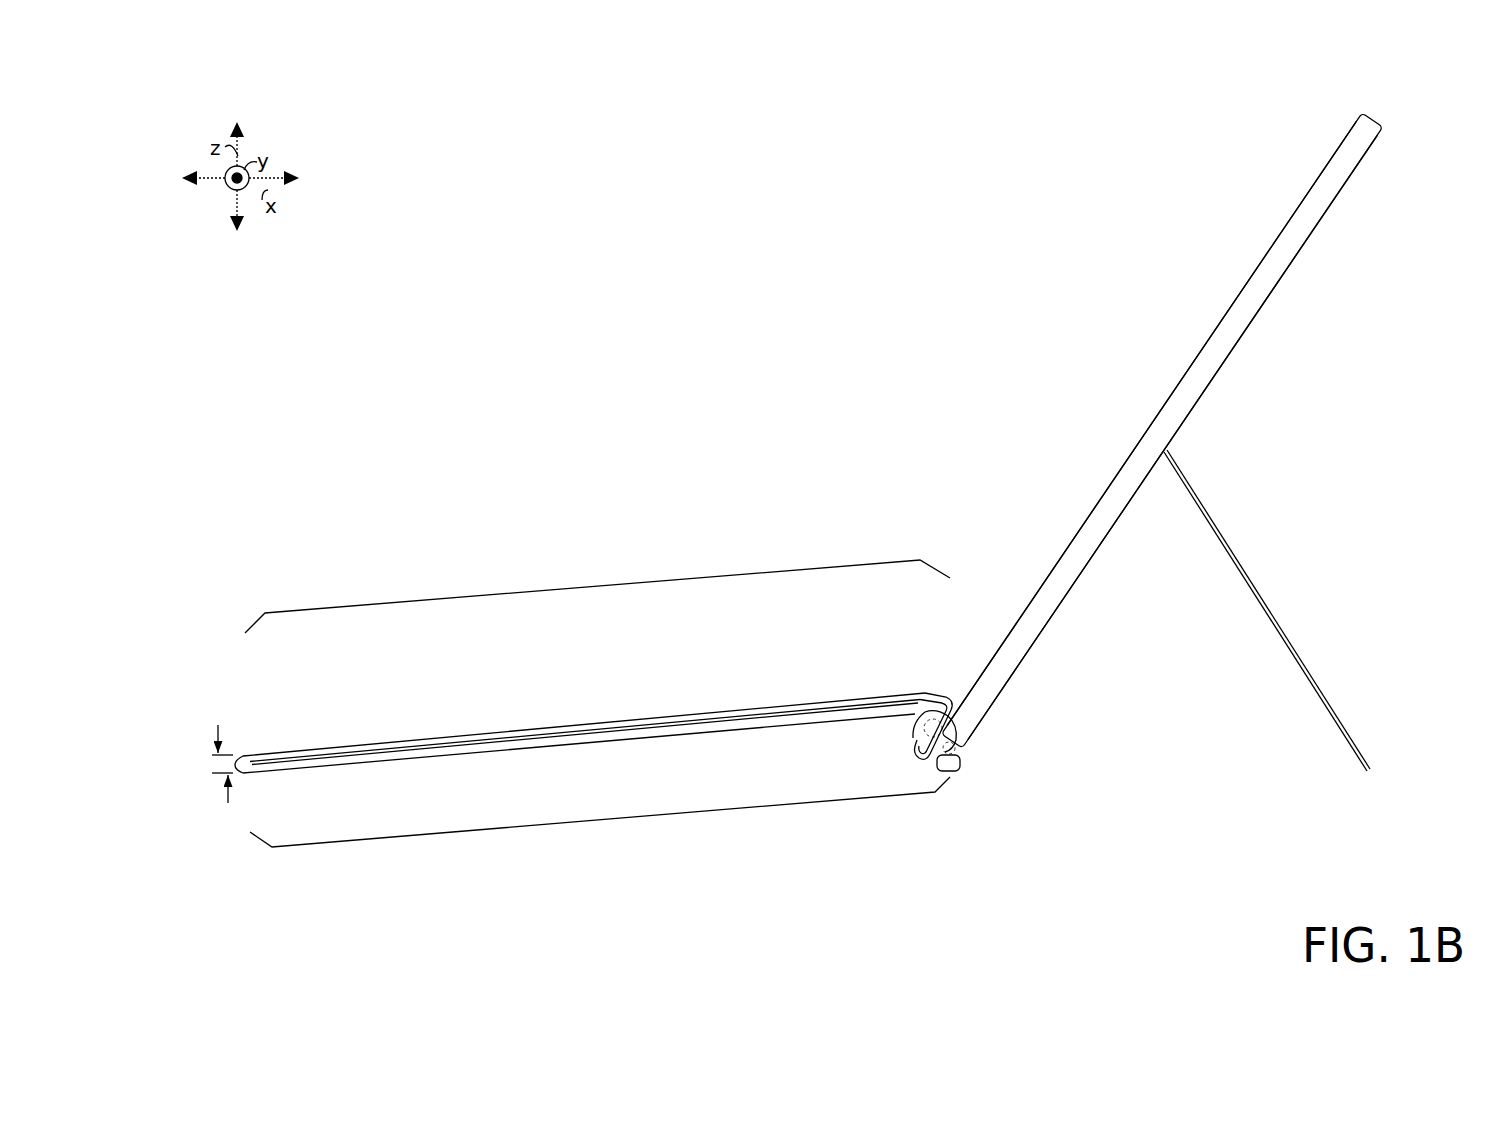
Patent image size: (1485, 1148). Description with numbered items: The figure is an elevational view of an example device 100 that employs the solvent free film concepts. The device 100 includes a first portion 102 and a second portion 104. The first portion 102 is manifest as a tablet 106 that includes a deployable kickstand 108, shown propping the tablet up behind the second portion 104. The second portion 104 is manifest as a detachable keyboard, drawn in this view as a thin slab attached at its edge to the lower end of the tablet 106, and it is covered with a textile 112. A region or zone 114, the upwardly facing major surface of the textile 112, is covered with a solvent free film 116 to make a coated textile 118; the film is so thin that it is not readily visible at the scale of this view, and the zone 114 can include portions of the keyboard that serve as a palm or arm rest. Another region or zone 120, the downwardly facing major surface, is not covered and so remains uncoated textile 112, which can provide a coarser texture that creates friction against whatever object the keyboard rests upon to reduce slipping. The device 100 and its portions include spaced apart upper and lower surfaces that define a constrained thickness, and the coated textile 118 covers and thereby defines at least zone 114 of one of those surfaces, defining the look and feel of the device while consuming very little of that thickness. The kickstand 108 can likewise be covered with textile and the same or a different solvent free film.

The device 100 is at (652, 95).
The first portion 102 is at (1362, 87).
The second portion 104 is at (607, 503).
The tablet 106 is at (1177, 387).
The kickstand 108 is at (1222, 532).
The textile 112 is at (818, 702).
The zone 114 is at (605, 585).
The solvent free film 116 is at (520, 730).
The coated textile 118 is at (728, 707).
The zone 120 is at (592, 822).